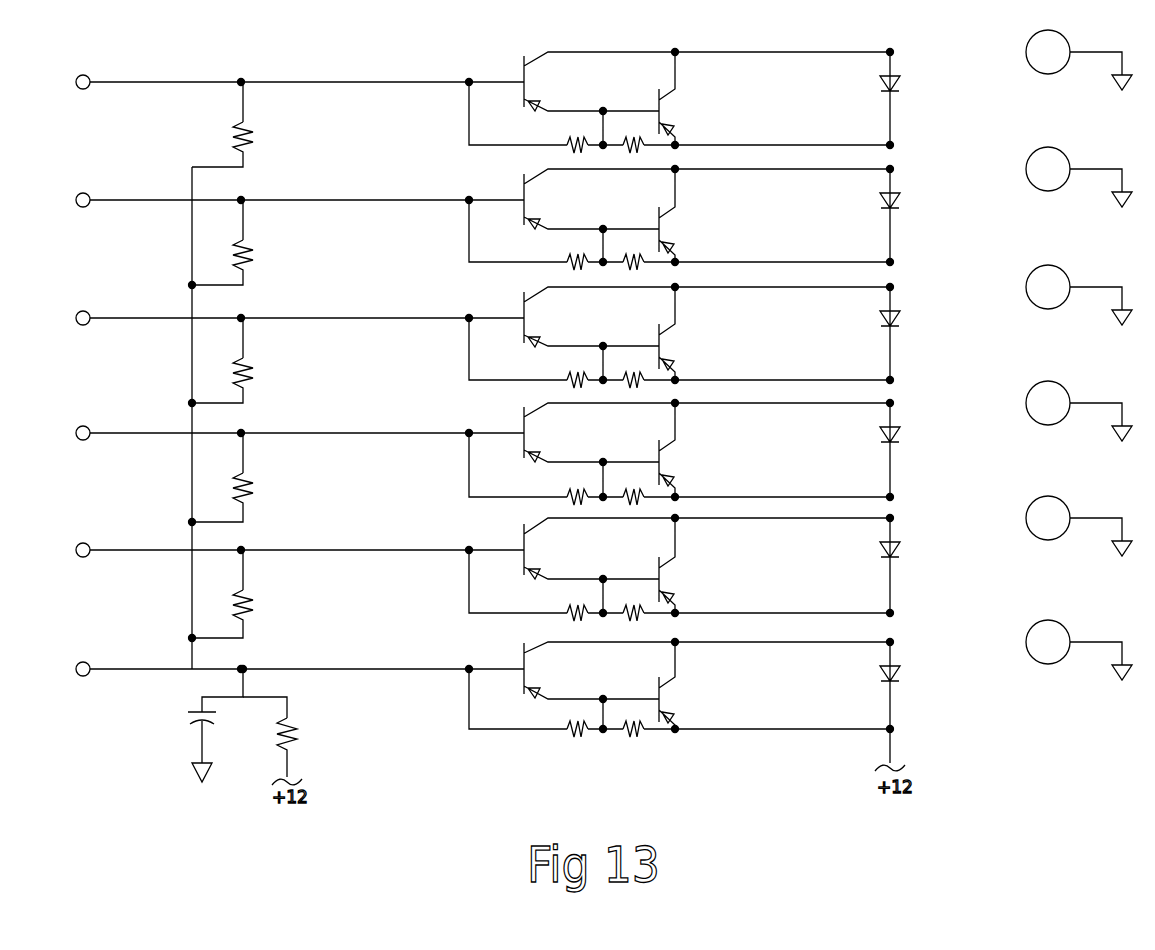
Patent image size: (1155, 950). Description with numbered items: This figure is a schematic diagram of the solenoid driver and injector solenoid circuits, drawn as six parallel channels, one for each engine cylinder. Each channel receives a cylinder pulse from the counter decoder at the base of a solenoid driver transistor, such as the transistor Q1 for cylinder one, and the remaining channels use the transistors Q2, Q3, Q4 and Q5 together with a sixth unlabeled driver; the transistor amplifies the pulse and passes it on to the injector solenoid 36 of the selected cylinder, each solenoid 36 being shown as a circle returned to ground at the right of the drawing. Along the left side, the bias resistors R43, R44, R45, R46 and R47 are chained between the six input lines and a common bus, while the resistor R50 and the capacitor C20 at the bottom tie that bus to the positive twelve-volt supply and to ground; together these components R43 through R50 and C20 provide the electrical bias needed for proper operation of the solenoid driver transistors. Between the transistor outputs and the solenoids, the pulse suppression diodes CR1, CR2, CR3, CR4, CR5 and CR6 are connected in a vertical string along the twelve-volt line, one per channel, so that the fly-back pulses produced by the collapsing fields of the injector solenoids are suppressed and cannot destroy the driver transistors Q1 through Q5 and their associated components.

The injector solenoid 36 is at (1042, 73).
The solenoid driver transistor Q1 is at (483, 101).
The solenoid driver transistor Q2 is at (483, 218).
The solenoid driver transistor Q3 is at (483, 336).
The solenoid driver transistor Q4 is at (483, 453).
The solenoid driver transistor Q5 is at (483, 568).
The pulse suppression diode CR1 is at (907, 99).
The pulse suppression diode CR2 is at (907, 216).
The pulse suppression diode CR3 is at (907, 334).
The pulse suppression diode CR4 is at (907, 450).
The pulse suppression diode CR5 is at (907, 566).
The pulse suppression diode CR6 is at (907, 686).
The bias resistor R43 is at (242, 124).
The bias resistor R44 is at (241, 244).
The bias resistor R45 is at (241, 362).
The bias resistor R46 is at (241, 479).
The bias resistor R47 is at (241, 596).
The bias resistor R50 is at (289, 741).
The bias capacitor C20 is at (197, 724).